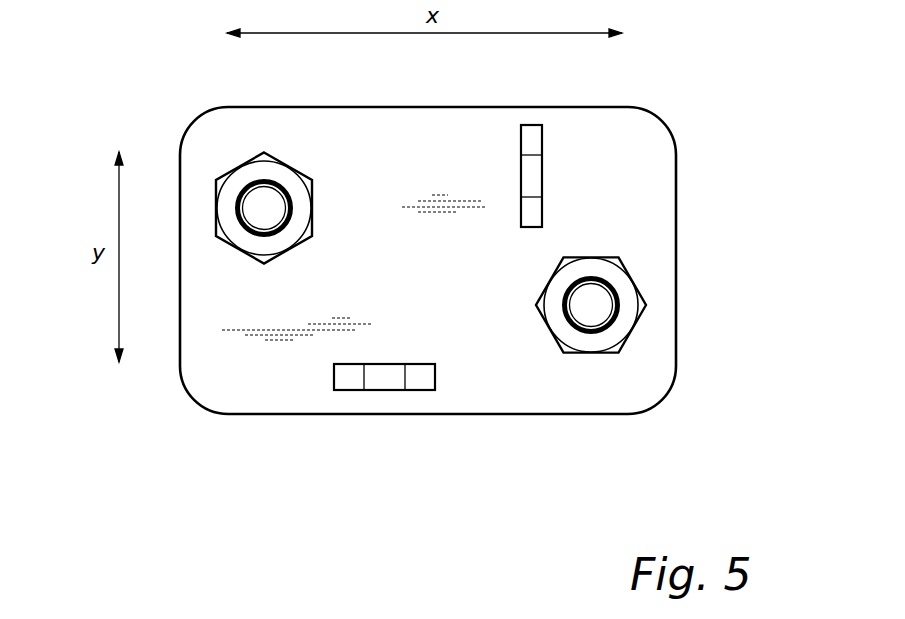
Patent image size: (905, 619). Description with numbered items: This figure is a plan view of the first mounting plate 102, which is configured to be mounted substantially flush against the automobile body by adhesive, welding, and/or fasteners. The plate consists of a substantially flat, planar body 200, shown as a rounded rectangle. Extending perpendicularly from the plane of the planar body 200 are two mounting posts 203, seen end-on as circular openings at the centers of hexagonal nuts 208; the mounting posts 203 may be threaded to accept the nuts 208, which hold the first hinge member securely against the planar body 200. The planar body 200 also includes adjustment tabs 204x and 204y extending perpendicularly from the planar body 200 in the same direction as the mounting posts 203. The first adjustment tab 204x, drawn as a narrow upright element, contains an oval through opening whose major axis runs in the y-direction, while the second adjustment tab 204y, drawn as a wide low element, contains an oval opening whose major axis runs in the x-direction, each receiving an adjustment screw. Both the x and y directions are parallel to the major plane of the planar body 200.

The first mounting plate 102 is at (170, 94).
The planar body 200 is at (207, 383).
The mounting posts 203 is at (593, 303).
The first adjustment tab 204x is at (532, 140).
The second adjustment tab 204y is at (385, 383).
The nuts 208 is at (608, 337).